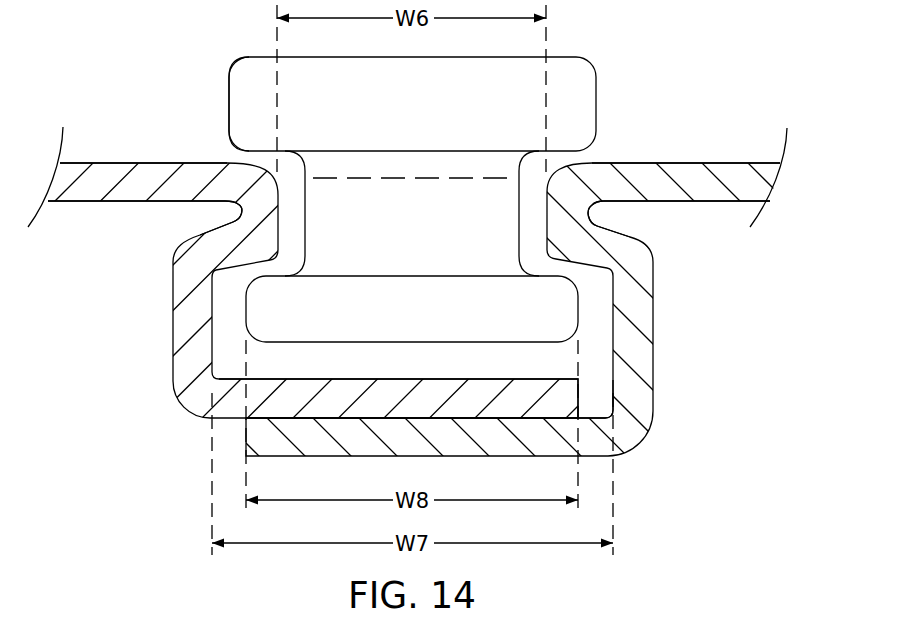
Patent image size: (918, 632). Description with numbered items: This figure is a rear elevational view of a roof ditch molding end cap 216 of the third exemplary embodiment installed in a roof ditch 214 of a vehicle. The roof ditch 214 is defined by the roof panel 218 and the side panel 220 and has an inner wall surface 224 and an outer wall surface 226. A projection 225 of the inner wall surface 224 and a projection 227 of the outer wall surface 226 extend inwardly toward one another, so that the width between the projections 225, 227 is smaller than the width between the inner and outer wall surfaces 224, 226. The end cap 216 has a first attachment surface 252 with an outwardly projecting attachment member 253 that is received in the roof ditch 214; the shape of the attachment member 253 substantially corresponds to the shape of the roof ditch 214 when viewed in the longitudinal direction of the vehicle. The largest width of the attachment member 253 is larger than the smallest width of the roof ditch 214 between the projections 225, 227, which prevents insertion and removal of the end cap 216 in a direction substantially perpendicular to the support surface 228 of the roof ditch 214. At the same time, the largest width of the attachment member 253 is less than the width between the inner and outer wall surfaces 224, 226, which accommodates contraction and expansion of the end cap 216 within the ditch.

The roof ditch 214 is at (350, 372).
The roof ditch molding end cap 216 is at (605, 60).
The roof panel 218 is at (713, 163).
The side panel 220 is at (123, 163).
The inner wall surface 224 is at (653, 372).
The projection of the inner wall surface 225 is at (618, 222).
The outer wall surface 226 is at (173, 292).
The projection of the outer wall surface 227 is at (240, 212).
The support surface 228 is at (492, 378).
The first attachment surface 252 is at (228, 106).
The attachment member 253 is at (246, 318).